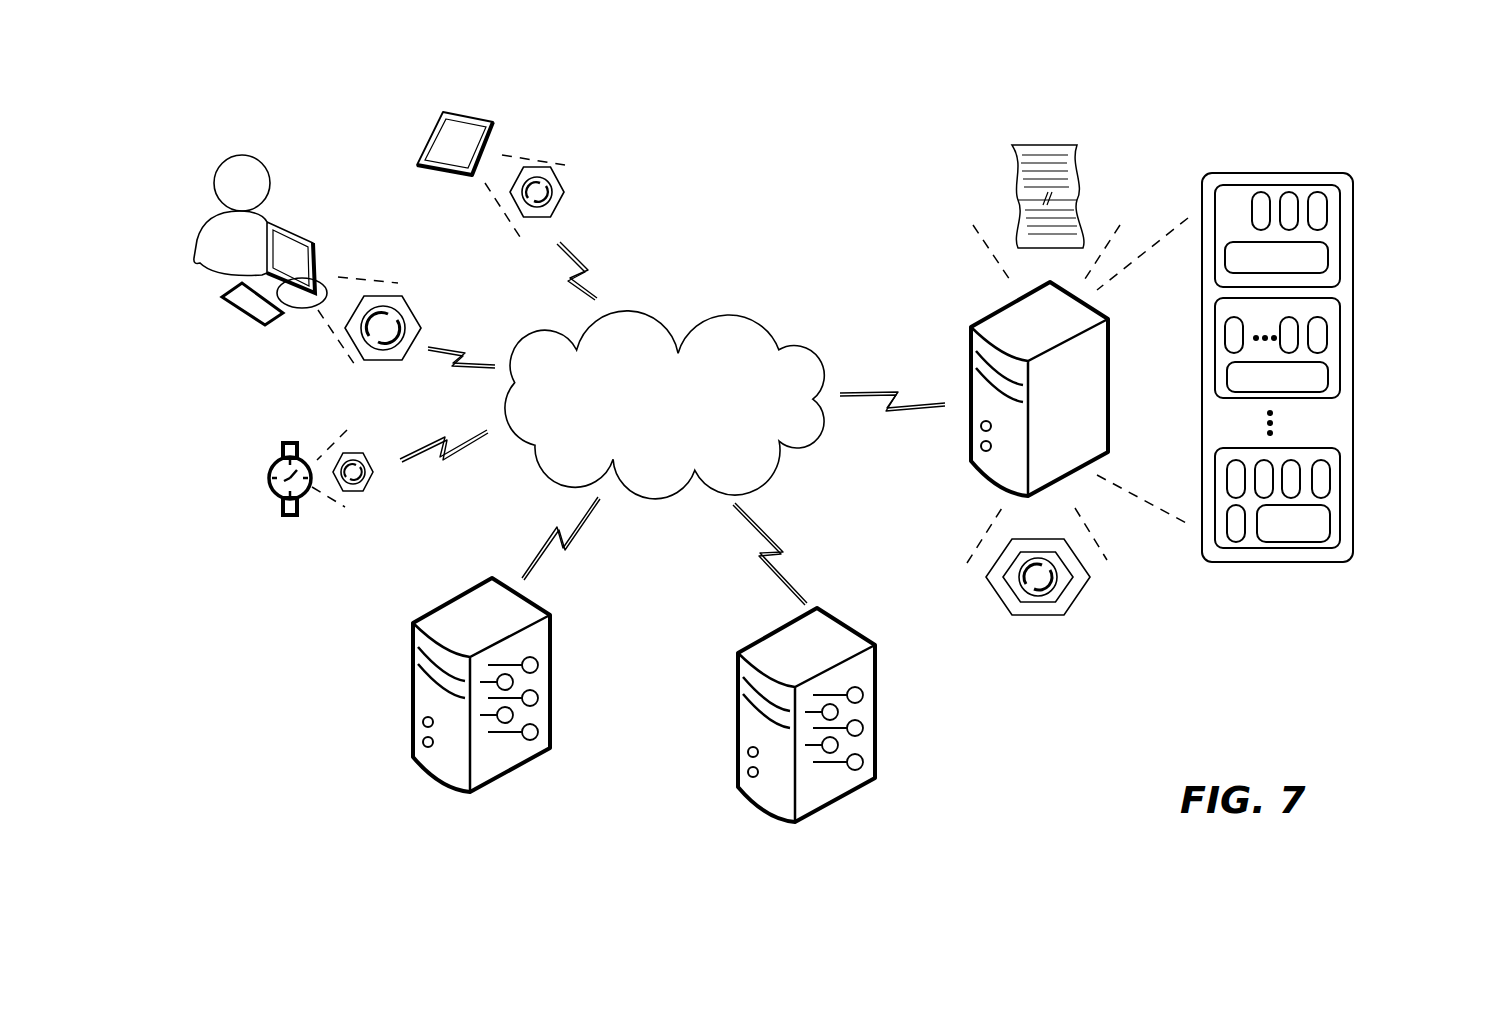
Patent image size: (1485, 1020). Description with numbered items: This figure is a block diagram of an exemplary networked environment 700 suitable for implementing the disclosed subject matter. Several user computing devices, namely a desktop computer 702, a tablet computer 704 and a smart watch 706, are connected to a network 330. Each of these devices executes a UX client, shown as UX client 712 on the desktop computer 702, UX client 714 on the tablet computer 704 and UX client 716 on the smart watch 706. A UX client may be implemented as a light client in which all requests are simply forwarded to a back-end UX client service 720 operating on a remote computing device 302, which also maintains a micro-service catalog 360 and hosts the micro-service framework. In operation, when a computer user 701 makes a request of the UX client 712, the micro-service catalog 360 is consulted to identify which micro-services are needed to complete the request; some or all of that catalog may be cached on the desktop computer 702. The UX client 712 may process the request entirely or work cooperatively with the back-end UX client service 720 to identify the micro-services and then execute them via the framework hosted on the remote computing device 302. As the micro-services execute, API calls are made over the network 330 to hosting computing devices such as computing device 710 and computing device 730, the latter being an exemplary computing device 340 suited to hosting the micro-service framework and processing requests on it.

The networked environment 700 is at (786, 188).
The computer user 701 is at (216, 168).
The desktop computer 702 is at (310, 237).
The tablet computer 704 is at (475, 112).
The smart watch 706 is at (270, 473).
The computing device 710 is at (540, 683).
The UX client 712 is at (395, 298).
The UX client 714 is at (547, 165).
The UX client 716 is at (355, 457).
The back-end UX client service 720 is at (1075, 602).
The computing device 730 is at (860, 710).
The computing device 340 is at (850, 715).
The remote computing device 302 is at (1087, 393).
The network 330 is at (750, 460).
The micro-service catalog 360 is at (1083, 150).